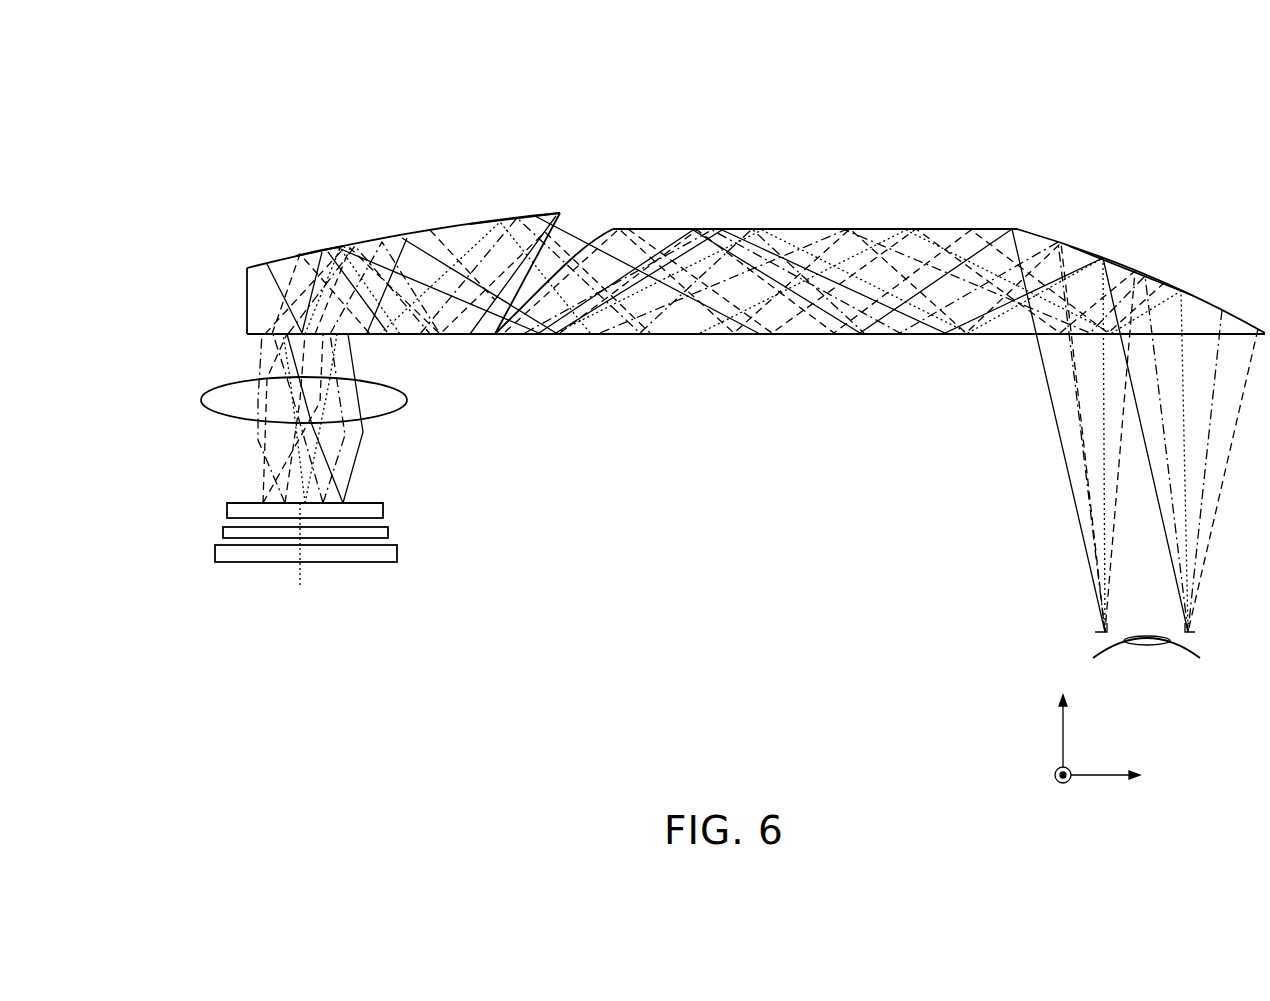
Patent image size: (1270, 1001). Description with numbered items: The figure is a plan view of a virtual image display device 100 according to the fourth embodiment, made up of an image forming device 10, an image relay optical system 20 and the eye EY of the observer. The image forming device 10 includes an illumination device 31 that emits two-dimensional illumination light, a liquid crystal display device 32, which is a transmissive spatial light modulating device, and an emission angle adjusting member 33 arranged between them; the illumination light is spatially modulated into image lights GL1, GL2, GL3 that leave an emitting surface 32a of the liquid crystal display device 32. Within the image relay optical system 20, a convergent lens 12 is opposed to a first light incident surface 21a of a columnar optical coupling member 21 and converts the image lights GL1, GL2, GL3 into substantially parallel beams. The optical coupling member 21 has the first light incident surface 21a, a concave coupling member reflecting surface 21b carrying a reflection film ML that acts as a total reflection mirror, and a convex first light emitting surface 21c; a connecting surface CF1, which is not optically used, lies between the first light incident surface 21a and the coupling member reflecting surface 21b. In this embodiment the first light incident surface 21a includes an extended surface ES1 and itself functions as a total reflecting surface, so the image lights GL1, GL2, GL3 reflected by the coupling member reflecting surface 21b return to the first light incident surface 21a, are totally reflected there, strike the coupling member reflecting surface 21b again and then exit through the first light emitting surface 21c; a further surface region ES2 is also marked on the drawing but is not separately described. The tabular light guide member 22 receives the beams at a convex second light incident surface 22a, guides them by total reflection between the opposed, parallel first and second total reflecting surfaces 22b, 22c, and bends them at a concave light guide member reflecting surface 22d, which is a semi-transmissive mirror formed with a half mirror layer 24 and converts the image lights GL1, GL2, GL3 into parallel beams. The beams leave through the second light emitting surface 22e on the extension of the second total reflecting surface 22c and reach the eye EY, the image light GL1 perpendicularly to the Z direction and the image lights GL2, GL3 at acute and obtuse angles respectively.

The head-mounted display device 100 is at (699, 105).
The image relay optical system 20 is at (551, 145).
The optical coupling member 21 is at (349, 213).
The first light incident surface 21a is at (268, 340).
The coupling member reflecting surface 21b is at (437, 234).
The first light emitting surface 21c is at (578, 236).
The light guide member 22 is at (828, 166).
The second light incident surface 22a is at (598, 240).
The first total reflecting surface 22b is at (833, 334).
The second total reflecting surface 22c is at (768, 229).
The light guide member reflecting surface 22d is at (1045, 238).
The second light emitting surface 22e is at (1088, 334).
The half mirror layer 24 is at (1122, 255).
The image forming device 10 is at (368, 584).
The convergent lens 12 is at (403, 400).
The illumination device 31 is at (248, 562).
The liquid crystal display device 32 is at (380, 512).
The emitting surface 32a is at (248, 503).
The emission angle adjusting member 33 is at (228, 532).
The reflection film ML is at (315, 250).
The connecting surface CF1 is at (247, 306).
The extended surface ES1 is at (450, 334).
The second end surface ES2 is at (483, 222).
The image light GL1 is at (306, 475).
The image light GL2 is at (362, 452).
The image light GL3 is at (255, 466).
The eye EY is at (1100, 640).